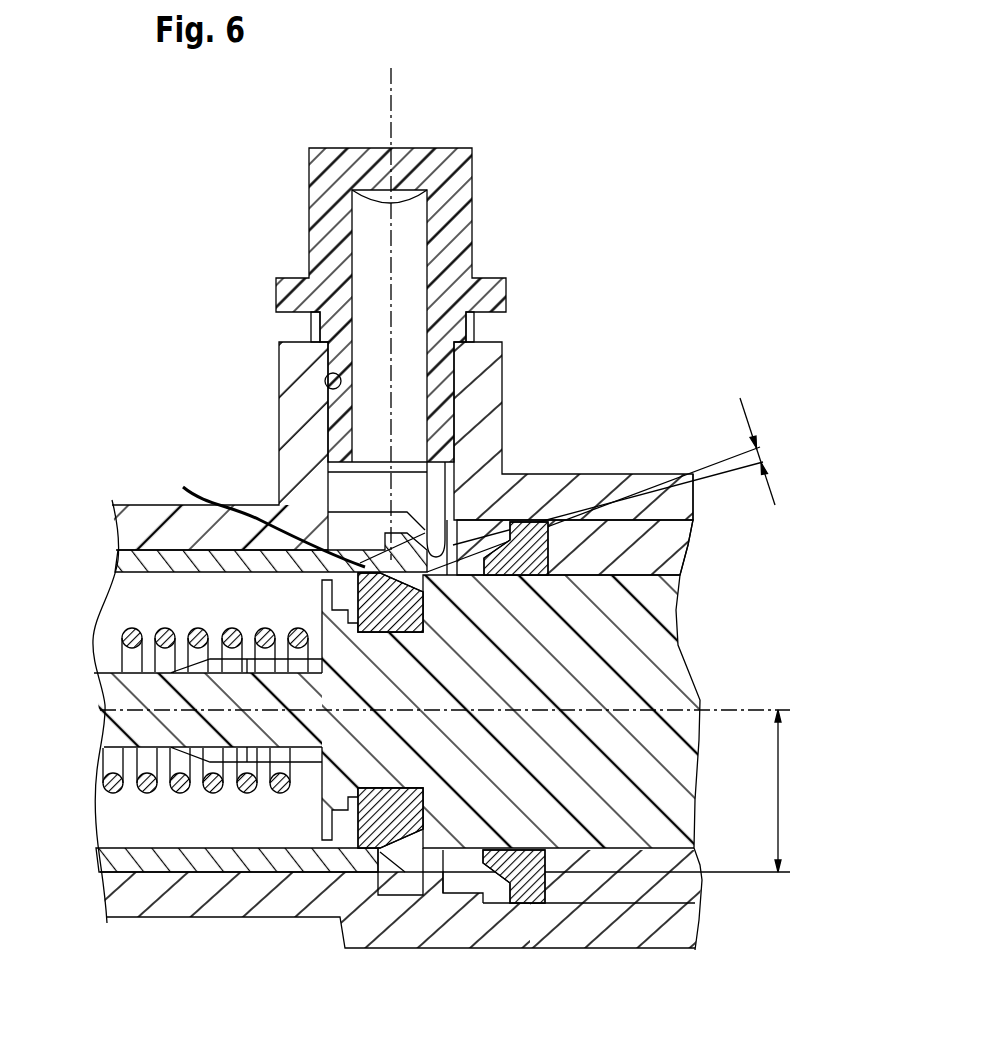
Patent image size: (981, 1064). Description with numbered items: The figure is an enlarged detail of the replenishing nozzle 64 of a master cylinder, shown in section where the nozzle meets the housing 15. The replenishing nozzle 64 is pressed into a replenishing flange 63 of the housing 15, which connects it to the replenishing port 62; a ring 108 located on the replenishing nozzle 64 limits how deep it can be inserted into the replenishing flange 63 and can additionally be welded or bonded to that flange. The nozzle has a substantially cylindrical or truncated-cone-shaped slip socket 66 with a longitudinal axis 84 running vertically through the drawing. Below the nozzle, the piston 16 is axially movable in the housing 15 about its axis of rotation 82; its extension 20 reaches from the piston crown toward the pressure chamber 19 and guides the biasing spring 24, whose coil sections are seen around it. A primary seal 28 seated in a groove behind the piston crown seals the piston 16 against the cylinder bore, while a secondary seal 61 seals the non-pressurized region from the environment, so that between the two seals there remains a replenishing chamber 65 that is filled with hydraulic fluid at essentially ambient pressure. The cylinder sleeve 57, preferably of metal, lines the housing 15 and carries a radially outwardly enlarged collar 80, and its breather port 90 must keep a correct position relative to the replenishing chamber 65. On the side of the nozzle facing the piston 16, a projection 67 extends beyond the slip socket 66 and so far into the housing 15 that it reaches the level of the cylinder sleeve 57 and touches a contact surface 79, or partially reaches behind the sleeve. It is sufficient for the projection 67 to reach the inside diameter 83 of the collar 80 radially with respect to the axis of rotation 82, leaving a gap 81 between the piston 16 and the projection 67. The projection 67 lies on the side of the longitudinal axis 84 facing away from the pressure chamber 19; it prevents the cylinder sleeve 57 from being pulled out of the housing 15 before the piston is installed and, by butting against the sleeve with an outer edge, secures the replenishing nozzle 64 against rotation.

The longitudinal axis of slip socket 84 is at (391, 78).
The replenishing nozzle 64 is at (450, 218).
The ring 108 is at (492, 323).
The replenishing flange 63 is at (490, 372).
The slip socket 66 is at (332, 392).
The replenishing port 62 is at (352, 493).
The contact surface 79 is at (367, 512).
The breather port 90 is at (257, 509).
The projection 67 is at (465, 471).
The replenishing chamber 65 is at (450, 508).
The gap 81 is at (757, 443).
The cylinder sleeve 57 is at (110, 555).
The pressure chamber 19 is at (215, 609).
The extension 20 is at (110, 690).
The axis of rotation of piston 82 is at (760, 706).
The biasing spring 24 is at (112, 781).
The piston 16 is at (642, 798).
The inside diameter of collar 83 is at (783, 790).
The housing 15 is at (220, 907).
The primary seal 28 is at (373, 856).
The collar 80 is at (398, 850).
The secondary seal 61 is at (538, 906).